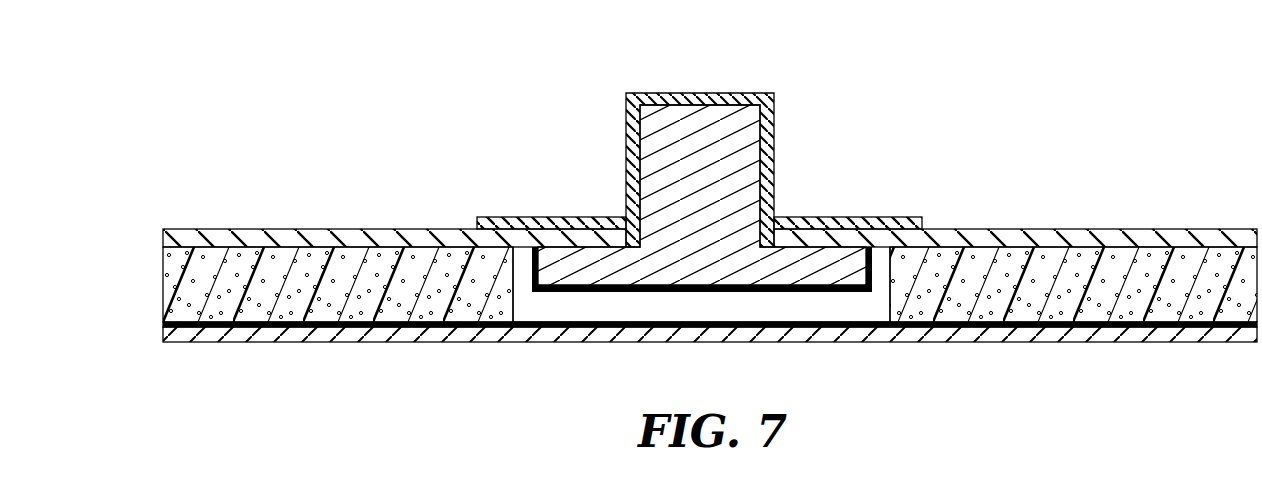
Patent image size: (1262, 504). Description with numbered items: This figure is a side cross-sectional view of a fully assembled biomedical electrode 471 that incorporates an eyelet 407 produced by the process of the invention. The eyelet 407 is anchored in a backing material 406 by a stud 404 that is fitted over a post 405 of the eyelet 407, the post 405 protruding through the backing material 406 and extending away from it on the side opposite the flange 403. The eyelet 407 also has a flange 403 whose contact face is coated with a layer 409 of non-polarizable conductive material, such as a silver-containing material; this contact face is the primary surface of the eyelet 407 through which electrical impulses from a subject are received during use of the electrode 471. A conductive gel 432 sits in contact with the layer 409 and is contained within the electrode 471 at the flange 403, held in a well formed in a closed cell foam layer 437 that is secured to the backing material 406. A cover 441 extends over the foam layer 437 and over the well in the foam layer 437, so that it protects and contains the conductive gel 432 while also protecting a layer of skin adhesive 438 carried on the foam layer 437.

The electrode 471 is at (452, 86).
The stud 404 is at (753, 92).
The post 405 is at (656, 163).
The backing material 406 is at (193, 229).
The flange 403 is at (866, 224).
The closed cell foam layer 437 is at (177, 287).
The layer of skin adhesive 438 is at (162, 323).
The cover 441 is at (193, 342).
The layer of non-polarizable conductive material 409 is at (588, 292).
The eyelet 407 is at (722, 303).
The conductive gel 432 is at (772, 312).